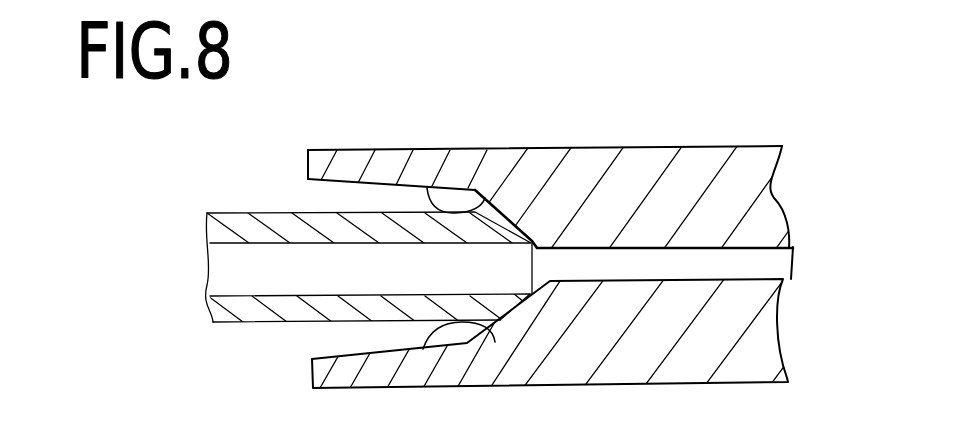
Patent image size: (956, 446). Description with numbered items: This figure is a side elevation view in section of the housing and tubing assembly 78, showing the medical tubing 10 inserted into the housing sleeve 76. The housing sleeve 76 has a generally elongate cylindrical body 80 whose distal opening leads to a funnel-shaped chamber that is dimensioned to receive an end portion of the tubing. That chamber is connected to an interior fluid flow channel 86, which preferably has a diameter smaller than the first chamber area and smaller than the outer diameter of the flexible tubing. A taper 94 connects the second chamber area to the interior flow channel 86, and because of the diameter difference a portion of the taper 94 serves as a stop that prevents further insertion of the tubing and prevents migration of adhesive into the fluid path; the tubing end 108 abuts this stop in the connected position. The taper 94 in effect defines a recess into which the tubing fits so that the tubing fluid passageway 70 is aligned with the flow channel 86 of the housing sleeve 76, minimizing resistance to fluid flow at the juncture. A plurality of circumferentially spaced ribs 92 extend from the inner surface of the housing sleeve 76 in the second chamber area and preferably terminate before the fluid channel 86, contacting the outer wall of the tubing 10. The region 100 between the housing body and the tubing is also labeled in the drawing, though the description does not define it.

The medical tubing 10 is at (259, 194).
The fluid passageway 70 is at (221, 282).
The housing sleeve 76 is at (643, 383).
The housing and tubing assembly 78 is at (566, 127).
The elongate cylindrical body 80 is at (707, 141).
The interior fluid flow channel 86 is at (773, 268).
The ribs 92 is at (448, 195).
The taper 94 is at (502, 320).
The gap between body and tube 100 is at (356, 192).
The tubing end 108 is at (534, 265).